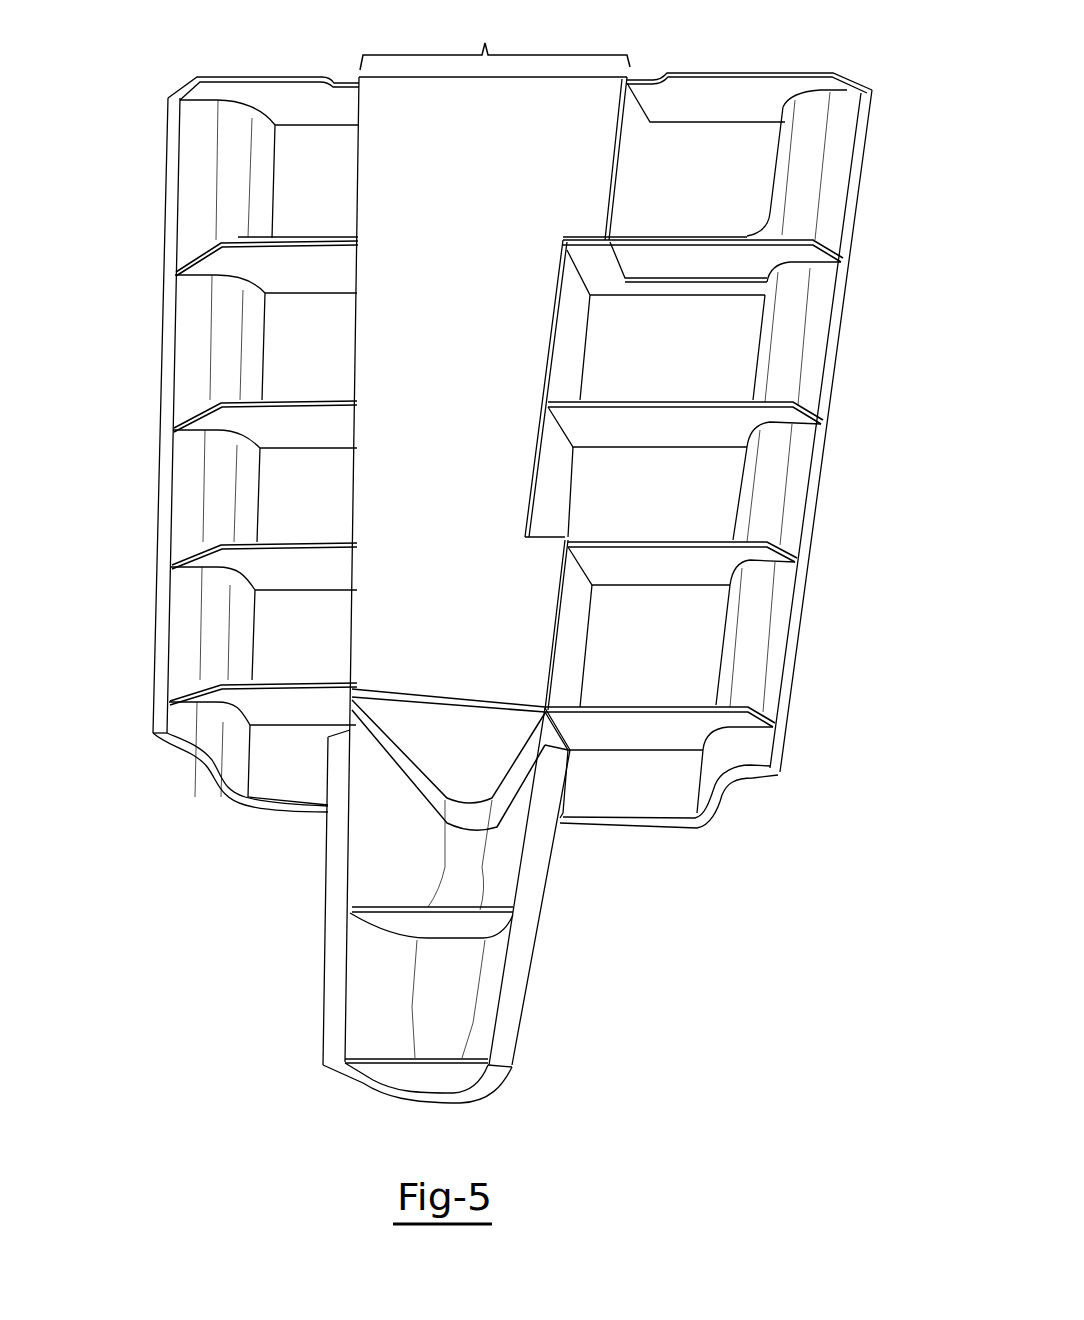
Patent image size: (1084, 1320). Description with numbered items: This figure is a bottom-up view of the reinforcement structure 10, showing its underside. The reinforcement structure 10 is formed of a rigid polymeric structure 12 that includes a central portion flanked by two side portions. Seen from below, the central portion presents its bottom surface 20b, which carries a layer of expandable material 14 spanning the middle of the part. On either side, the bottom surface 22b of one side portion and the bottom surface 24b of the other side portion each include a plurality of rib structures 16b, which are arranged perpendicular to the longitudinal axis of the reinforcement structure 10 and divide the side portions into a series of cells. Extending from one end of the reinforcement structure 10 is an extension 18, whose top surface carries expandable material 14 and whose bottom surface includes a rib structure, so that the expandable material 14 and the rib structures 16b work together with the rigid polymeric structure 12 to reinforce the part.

The reinforcement structure 10 is at (130, 139).
The rigid polymeric structure 12 is at (686, 358).
The expandable material 14 is at (461, 371).
The rib structures 16b is at (297, 397).
The extension 18 is at (492, 965).
The bottom surface of the central portion 20b is at (495, 38).
The bottom surface of the side portion 22b is at (195, 378).
The bottom surface of the side portion 24b is at (795, 452).